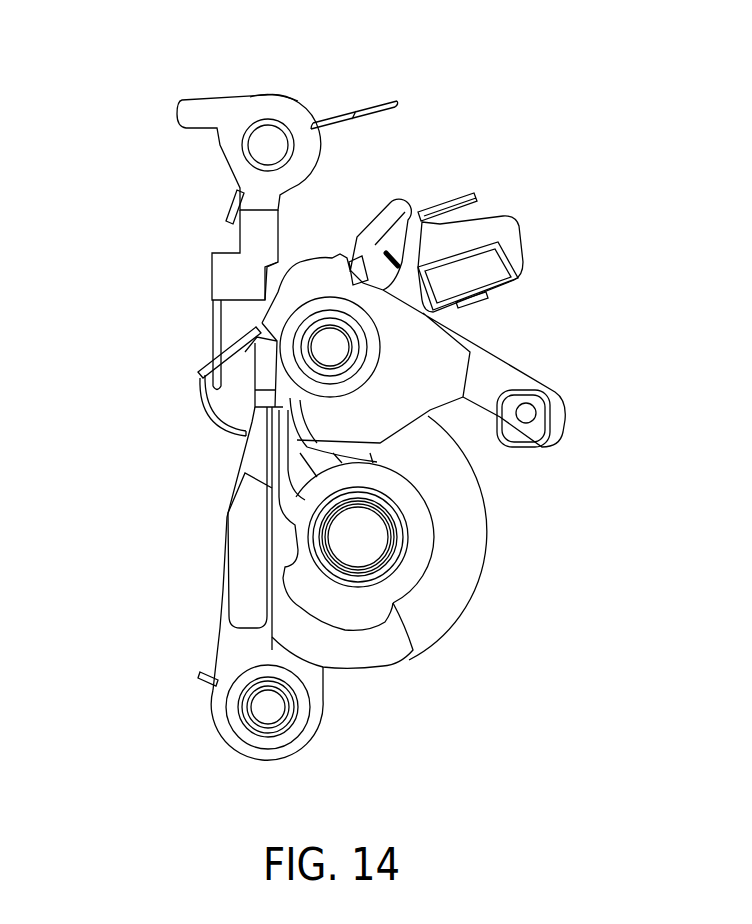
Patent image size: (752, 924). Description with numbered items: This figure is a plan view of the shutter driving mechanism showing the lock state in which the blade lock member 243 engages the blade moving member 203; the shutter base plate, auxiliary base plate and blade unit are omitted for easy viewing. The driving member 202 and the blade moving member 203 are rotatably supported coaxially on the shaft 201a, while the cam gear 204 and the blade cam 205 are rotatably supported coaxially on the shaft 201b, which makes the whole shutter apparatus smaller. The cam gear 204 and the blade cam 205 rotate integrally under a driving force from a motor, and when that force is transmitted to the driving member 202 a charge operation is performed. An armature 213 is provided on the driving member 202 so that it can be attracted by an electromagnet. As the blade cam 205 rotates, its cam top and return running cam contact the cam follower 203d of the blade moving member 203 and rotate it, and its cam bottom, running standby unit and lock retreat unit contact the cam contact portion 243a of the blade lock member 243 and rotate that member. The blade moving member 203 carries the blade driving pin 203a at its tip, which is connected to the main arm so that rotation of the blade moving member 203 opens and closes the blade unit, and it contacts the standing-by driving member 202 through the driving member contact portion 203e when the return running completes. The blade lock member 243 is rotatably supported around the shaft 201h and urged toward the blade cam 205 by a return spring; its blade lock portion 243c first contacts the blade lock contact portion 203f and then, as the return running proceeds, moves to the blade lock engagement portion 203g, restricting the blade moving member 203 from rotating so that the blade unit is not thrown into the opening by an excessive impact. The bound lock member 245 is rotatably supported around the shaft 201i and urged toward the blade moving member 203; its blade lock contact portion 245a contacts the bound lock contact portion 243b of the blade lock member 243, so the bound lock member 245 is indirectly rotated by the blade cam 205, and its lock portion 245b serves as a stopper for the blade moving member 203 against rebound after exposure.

The shaft 201i is at (265, 140).
The blade lock engagement portion 203g is at (270, 307).
The bound lock member 245 is at (233, 155).
The driving member contact portion 203e is at (404, 240).
The driving member 202 is at (484, 227).
The armature 213 is at (480, 274).
The lock portion 245b is at (258, 296).
The blade lock contact portion 203f is at (267, 315).
The blade moving member 203 is at (413, 360).
The blade driving pin 203a is at (533, 403).
The blade lock contact portion 245a is at (213, 338).
The bound lock contact portion 243b is at (217, 363).
The blade lock portion 243c is at (230, 410).
The shaft 201a is at (340, 352).
The cam follower 203d is at (400, 466).
The cam contact portion 243a is at (300, 530).
The cam gear 204 is at (458, 583).
The blade lock member 243 is at (217, 683).
The blade cam 205 is at (350, 647).
The shaft 201b is at (360, 540).
The shaft 201h is at (270, 703).